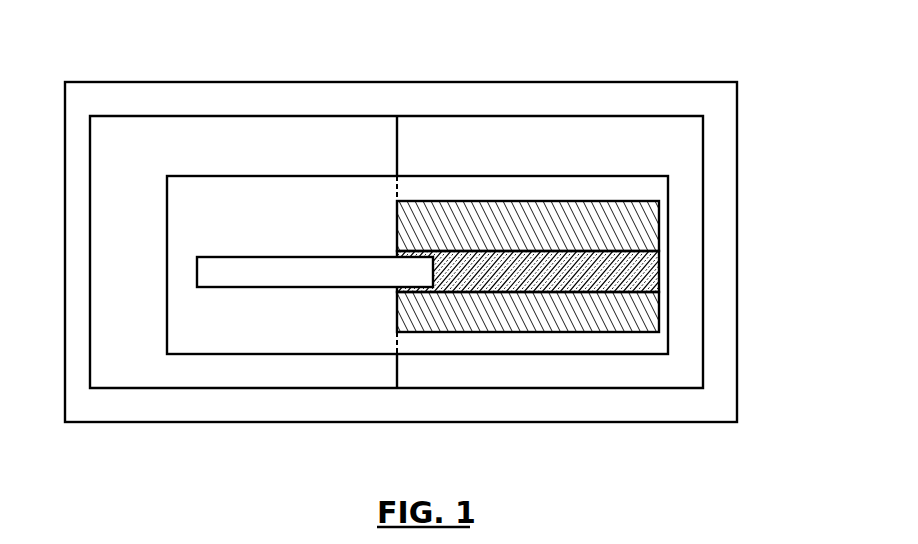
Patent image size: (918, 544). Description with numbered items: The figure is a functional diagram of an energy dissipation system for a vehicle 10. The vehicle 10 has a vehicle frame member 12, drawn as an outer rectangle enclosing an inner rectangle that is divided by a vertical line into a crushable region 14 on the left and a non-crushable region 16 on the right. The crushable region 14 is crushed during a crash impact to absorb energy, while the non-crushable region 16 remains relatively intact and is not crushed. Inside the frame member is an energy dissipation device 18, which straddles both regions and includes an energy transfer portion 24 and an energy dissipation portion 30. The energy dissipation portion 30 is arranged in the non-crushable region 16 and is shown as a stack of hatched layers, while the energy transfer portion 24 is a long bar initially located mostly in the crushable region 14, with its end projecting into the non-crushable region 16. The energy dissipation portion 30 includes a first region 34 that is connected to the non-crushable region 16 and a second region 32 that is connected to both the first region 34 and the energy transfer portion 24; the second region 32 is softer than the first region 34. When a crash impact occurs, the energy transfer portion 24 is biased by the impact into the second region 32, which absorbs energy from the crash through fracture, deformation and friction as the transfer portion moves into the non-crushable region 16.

The vehicle 10 is at (99, 60).
The vehicle frame member 12 is at (312, 82).
The crushable region 14 is at (200, 116).
The non-crushable region 16 is at (573, 116).
The energy dissipation device 18 is at (650, 176).
The energy transfer portion 24 is at (297, 257).
The energy dissipation portion 30 is at (659, 212).
The second region 32 is at (659, 277).
The first region 34 is at (659, 317).